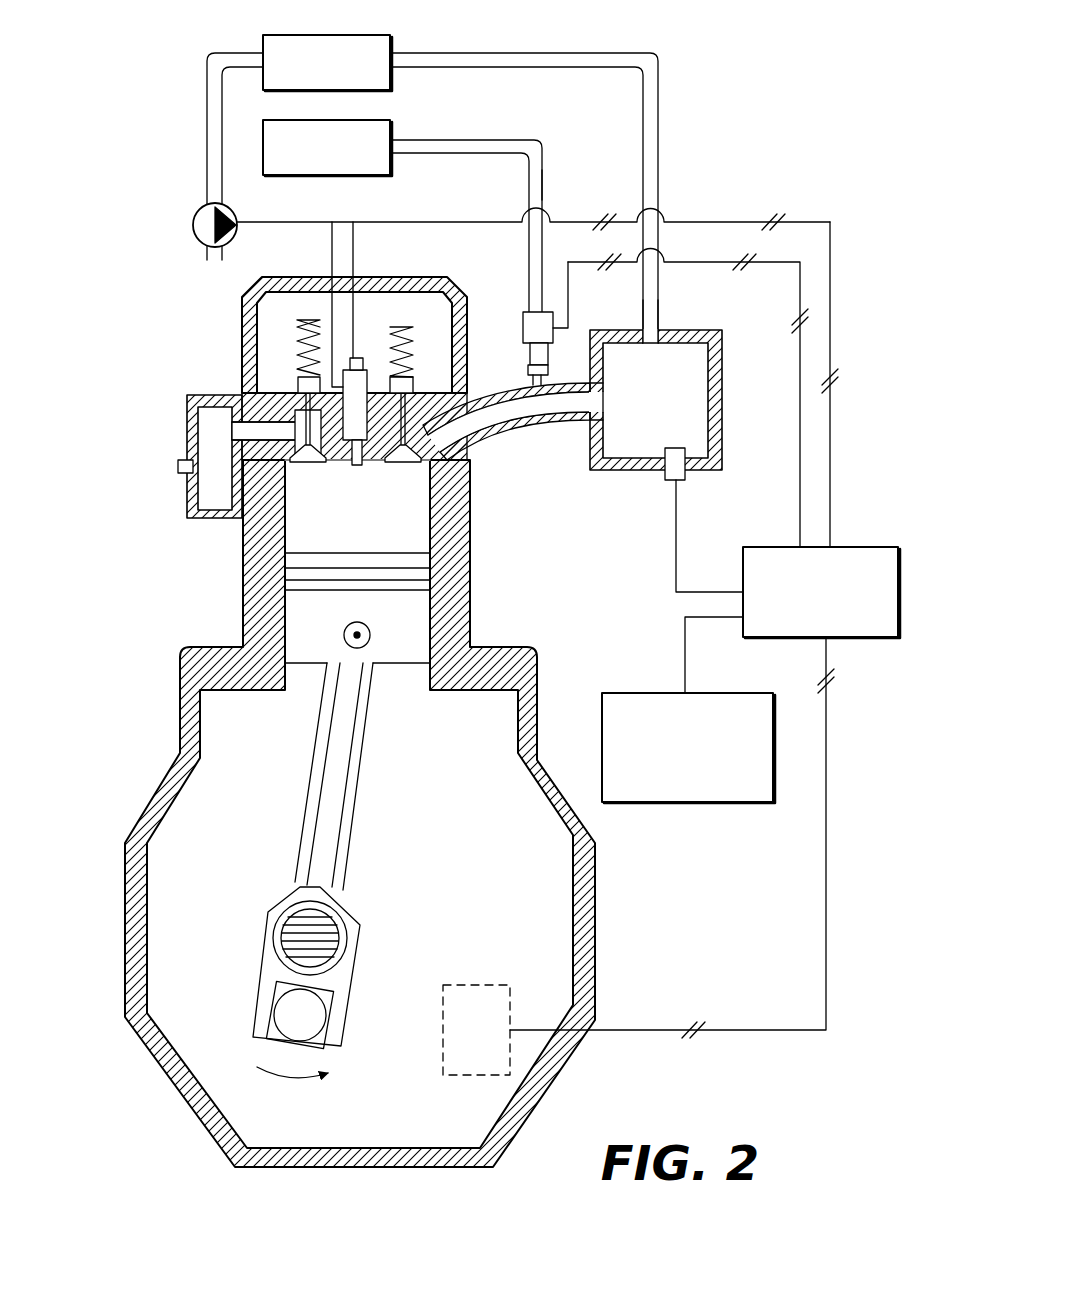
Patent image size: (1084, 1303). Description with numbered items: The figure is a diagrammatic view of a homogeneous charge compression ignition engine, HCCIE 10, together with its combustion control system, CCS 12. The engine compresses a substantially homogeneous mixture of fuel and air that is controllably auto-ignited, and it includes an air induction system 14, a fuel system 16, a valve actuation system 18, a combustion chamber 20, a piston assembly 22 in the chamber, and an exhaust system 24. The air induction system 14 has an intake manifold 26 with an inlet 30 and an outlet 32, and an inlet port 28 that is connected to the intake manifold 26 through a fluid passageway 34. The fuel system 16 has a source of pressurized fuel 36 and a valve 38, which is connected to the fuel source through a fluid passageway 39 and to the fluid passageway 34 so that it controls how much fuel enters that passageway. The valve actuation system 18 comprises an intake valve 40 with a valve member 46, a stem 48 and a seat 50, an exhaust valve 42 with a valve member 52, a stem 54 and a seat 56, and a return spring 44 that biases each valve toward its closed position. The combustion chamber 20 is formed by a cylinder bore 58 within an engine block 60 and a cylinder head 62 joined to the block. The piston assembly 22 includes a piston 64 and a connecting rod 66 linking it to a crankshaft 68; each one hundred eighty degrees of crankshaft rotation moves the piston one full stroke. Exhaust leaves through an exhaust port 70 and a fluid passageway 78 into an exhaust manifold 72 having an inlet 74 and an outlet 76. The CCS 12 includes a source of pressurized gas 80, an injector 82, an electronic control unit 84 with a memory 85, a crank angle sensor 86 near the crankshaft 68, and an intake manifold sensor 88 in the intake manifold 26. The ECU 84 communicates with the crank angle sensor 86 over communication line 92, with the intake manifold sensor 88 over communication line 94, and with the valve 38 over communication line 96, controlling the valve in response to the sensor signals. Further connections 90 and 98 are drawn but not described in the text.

The homogeneous charge compression ignition engine (HCCIE) 10 is at (103, 545).
The combustion control system (CCS) 12 is at (890, 656).
The air induction system 14 is at (664, 47).
The fuel system 16 is at (546, 135).
The valve actuation system 18 is at (290, 318).
The combustion chamber 20 is at (338, 548).
The piston assembly 22 is at (402, 730).
The exhaust system 24 is at (132, 432).
The intake manifold 26 is at (640, 413).
The inlet port 28 is at (456, 478).
The inlet 30 is at (652, 333).
The outlet 32 is at (590, 408).
The fluid passageway 34 is at (500, 380).
The source of pressurized fuel 36 is at (390, 135).
The valve 38 is at (535, 315).
The fluid passageway 39 is at (537, 182).
The intake valve 40 is at (410, 472).
The exhaust valve 42 is at (292, 470).
The return spring 44 is at (396, 326).
The valve member 46 is at (394, 465).
The stem 48 is at (413, 395).
The seat 50 is at (360, 470).
The valve member 52 is at (302, 463).
The stem 54 is at (292, 415).
The seat 56 is at (247, 532).
The cylinder bore 58 is at (445, 565).
The engine block 60 is at (477, 668).
The cylinder head 62 is at (243, 393).
The piston 64 is at (298, 643).
The connecting rod 66 is at (330, 820).
The crankshaft 68 is at (286, 1028).
The exhaust port 70 is at (250, 358).
The exhaust manifold 72 is at (202, 503).
The inlet 74 is at (235, 425).
The outlet 76 is at (178, 467).
The fluid passageway 78 is at (244, 434).
The source of pressurized gas 80 is at (193, 224).
The injector 82 is at (358, 398).
The electronic control unit (ECU) 84 is at (805, 625).
The memory 85 is at (685, 803).
The crank angle sensor 86 is at (462, 1045).
The intake manifold sensor 88 is at (688, 472).
The pump wire 90 is at (293, 222).
The communication line 92 is at (826, 892).
The communication line 94 is at (677, 545).
The communication line 96 is at (800, 400).
The ignition wire 98 is at (832, 290).